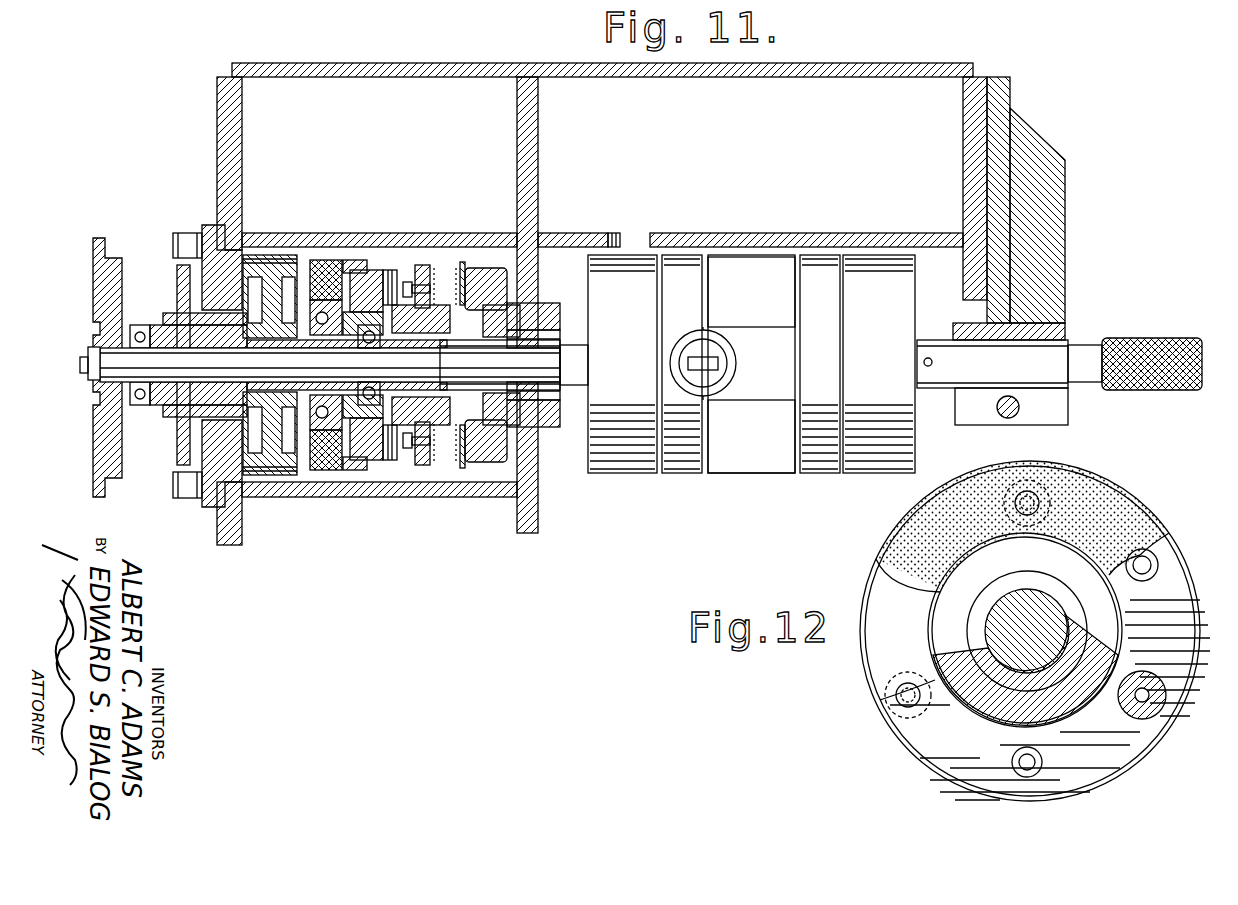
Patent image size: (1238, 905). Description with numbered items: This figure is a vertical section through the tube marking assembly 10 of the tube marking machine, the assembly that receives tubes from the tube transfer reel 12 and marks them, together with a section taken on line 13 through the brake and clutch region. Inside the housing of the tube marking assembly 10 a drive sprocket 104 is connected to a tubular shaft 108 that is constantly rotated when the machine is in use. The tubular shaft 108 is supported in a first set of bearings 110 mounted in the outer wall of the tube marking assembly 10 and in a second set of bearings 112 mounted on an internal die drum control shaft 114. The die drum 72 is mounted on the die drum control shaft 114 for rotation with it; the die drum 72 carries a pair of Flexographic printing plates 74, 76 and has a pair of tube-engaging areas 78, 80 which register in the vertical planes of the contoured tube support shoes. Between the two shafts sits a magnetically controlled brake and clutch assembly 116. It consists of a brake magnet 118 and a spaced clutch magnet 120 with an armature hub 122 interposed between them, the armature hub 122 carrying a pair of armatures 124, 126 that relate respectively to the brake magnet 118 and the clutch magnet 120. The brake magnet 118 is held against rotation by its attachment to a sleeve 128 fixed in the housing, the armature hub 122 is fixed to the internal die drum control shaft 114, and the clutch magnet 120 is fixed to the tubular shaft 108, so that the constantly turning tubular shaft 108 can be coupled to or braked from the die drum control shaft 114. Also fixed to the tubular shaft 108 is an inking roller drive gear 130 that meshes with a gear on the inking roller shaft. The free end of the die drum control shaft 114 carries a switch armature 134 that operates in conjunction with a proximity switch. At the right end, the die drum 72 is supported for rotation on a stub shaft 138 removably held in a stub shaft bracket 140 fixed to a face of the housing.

In FIG. 11, the tube marking assembly 10 is at (205, 133).
In FIG. 11, the tube transfer reel 12 is at (457, 257).
In FIG. 11, the section line 13 is at (534, 372).
In FIG. 11, the die drum 72 is at (938, 255).
In FIG. 11, the Flexographic printing plate 74 is at (762, 256).
In FIG. 11, the Flexographic printing plate 76 is at (736, 473).
In FIG. 11, the tube-engaging area 78 is at (627, 473).
In FIG. 11, the tube-engaging area 80 is at (856, 473).
In FIG. 11, the drive sprocket 104 is at (180, 285).
In FIG. 11, the tubular shaft 108 is at (170, 350).
In FIG. 11, the first set of bearings 110 is at (205, 418).
In FIG. 11, the second set of bearings 112 is at (382, 348).
In FIG. 11, the die drum control shaft 114 is at (334, 365).
In FIG. 12, the die drum control shaft 114 is at (1035, 603).
In FIG. 11, the brake and clutch assembly 116 is at (325, 479).
In FIG. 11, the brake magnet 118 is at (485, 268).
In FIG. 11, the clutch magnet 120 is at (365, 270).
In FIG. 11, the armature hub 122 is at (422, 265).
In FIG. 12, the armature hub 122 is at (1173, 578).
In FIG. 11, the armature 124 is at (461, 262).
In FIG. 12, the armature 124 is at (1090, 497).
In FIG. 11, the armature 126 is at (391, 270).
In FIG. 11, the sleeve 128 is at (538, 428).
In FIG. 11, the inking roller drive gear 130 is at (268, 256).
In FIG. 11, the switch armature 134 is at (100, 238).
In FIG. 11, the stub shaft 138 is at (934, 388).
In FIG. 11, the stub shaft bracket 140 is at (1050, 326).